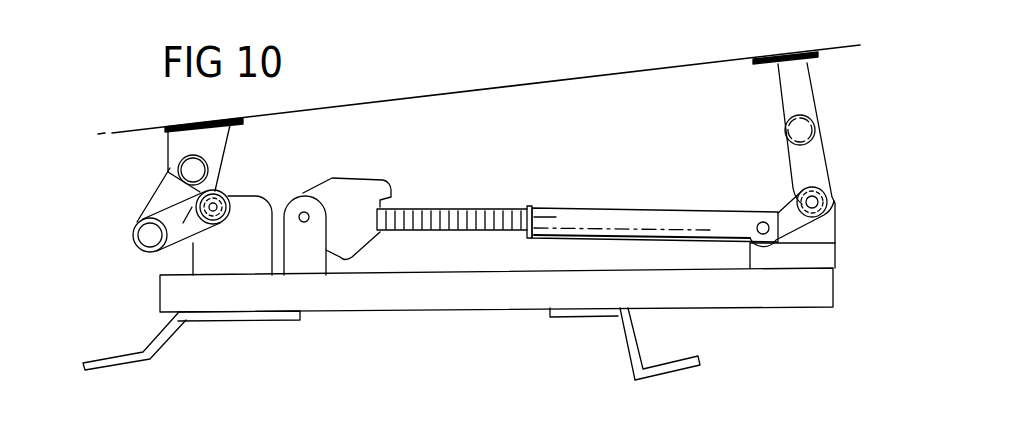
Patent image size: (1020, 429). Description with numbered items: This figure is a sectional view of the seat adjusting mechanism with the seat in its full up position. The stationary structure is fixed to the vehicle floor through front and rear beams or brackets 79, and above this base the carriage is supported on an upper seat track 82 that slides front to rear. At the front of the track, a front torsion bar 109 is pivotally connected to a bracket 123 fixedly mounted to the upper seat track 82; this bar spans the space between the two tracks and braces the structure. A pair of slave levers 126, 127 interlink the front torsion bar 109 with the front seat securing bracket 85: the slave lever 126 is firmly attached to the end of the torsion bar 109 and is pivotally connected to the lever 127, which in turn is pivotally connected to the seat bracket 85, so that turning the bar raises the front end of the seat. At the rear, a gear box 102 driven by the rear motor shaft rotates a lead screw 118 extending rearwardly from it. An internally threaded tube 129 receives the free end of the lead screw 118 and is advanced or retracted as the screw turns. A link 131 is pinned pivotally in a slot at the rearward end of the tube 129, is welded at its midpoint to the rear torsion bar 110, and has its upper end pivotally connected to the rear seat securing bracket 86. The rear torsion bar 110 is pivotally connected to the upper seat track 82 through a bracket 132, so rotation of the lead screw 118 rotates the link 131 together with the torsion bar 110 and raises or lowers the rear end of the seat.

The beams or brackets 79 is at (170, 337).
The upper seat track 82 is at (795, 287).
The seat securing bracket 85 is at (173, 140).
The seat securing bracket 86 is at (787, 88).
The gear box 102 is at (357, 194).
The front torsion bar 109 is at (222, 198).
The rear torsion bar 110 is at (798, 198).
The lead screw 118 is at (457, 210).
The bracket 123 is at (203, 262).
The slave lever 126 is at (158, 218).
The slave lever 127 is at (158, 200).
The internally threaded tube 129 is at (620, 216).
The link 131 is at (800, 160).
The bracket 132 is at (800, 246).